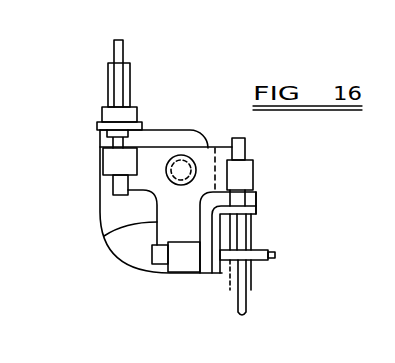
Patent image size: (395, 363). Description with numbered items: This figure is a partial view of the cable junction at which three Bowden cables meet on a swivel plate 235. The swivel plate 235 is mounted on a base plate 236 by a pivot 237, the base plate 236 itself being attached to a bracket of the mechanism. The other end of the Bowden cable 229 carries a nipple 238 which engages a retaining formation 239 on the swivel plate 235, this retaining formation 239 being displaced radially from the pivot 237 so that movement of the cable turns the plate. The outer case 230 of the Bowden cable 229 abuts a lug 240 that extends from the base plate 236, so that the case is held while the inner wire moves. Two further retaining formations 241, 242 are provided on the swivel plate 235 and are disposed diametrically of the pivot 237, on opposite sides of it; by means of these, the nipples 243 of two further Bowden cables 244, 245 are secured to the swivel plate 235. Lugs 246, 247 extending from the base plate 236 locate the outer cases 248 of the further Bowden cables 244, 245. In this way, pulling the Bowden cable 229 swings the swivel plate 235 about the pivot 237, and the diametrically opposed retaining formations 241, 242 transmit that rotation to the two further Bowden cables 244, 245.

The Bowden cable 229 is at (276, 256).
The outer case 230 is at (260, 248).
The swivel plate 235 is at (104, 234).
The base plate 236 is at (100, 222).
The pivot 237 is at (188, 153).
The nipple 238 is at (150, 257).
The retaining formation 239 is at (182, 273).
The lug 240 is at (218, 276).
The further retaining formation 241 is at (113, 163).
The further retaining formation 242 is at (257, 182).
The nipple 243 is at (113, 190).
The further Bowden cable 244 is at (131, 90).
The further Bowden cable 245 is at (249, 309).
The lug 246 is at (100, 128).
The lug 247 is at (259, 208).
The outer case 248 is at (131, 72).